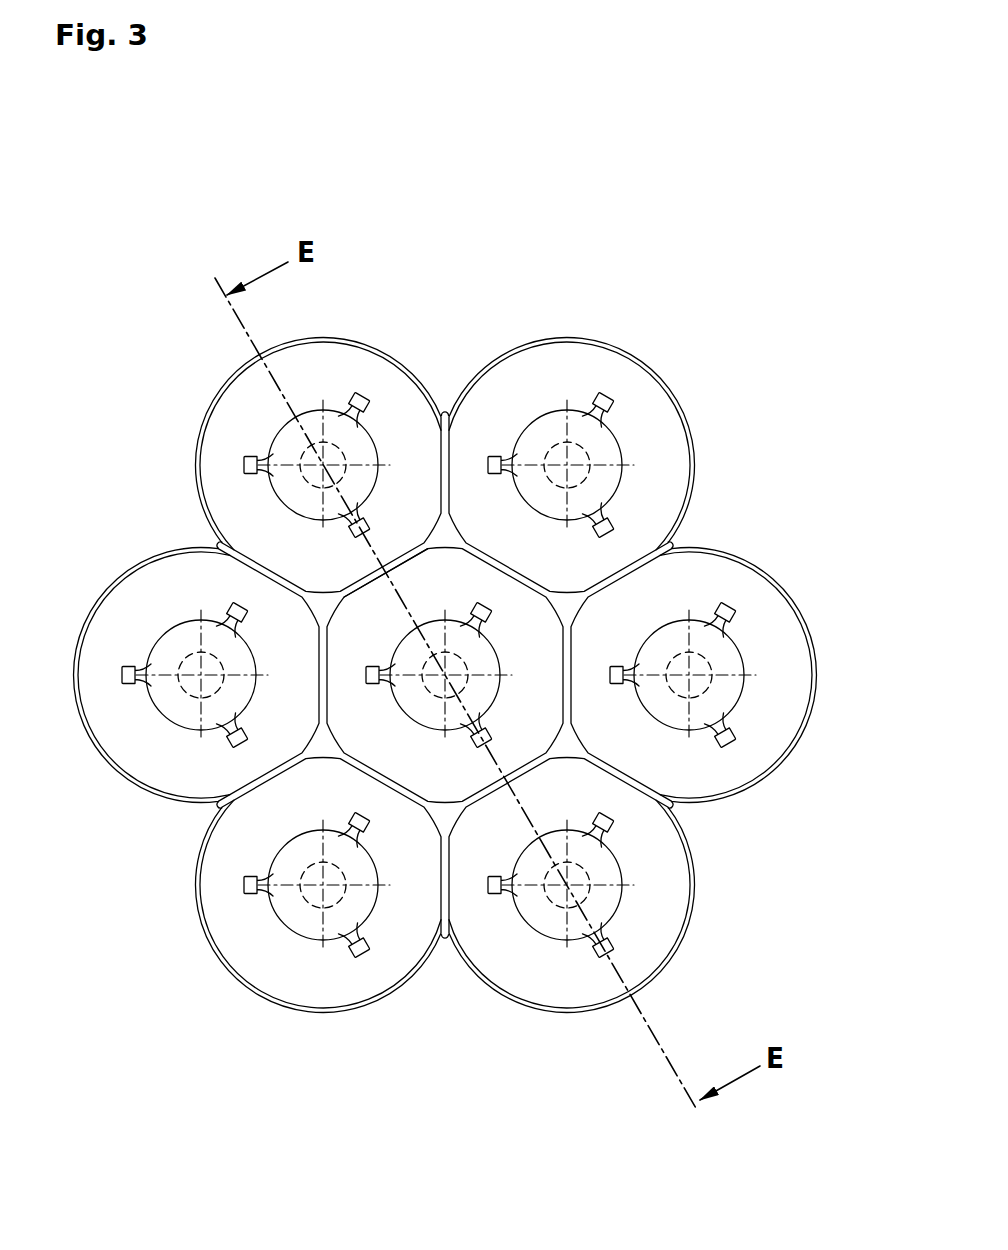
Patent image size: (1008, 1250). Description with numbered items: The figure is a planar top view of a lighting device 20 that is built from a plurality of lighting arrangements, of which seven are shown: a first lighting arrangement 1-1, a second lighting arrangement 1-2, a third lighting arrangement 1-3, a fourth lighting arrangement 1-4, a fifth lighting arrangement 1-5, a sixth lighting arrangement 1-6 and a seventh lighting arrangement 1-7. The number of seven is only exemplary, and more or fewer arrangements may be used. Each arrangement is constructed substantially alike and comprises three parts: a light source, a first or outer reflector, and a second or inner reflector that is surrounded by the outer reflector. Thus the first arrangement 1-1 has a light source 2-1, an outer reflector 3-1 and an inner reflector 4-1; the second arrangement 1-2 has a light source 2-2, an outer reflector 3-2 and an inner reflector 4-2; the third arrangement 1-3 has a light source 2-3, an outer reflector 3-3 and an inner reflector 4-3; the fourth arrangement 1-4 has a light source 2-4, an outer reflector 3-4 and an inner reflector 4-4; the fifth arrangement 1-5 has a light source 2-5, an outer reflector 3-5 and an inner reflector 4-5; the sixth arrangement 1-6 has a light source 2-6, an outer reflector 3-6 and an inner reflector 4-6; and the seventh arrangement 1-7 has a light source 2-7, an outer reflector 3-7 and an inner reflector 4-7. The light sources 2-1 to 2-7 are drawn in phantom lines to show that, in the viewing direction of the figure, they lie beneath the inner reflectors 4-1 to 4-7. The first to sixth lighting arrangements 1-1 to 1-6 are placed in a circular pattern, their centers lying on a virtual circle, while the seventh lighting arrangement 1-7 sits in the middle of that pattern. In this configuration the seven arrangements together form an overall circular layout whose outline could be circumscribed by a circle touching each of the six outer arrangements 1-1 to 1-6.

The lighting device 20 is at (183, 222).
The first lighting arrangement 1-1 is at (130, 556).
The second lighting arrangement 1-2 is at (346, 332).
The third lighting arrangement 1-3 is at (624, 332).
The fourth lighting arrangement 1-4 is at (731, 537).
The fifth lighting arrangement 1-5 is at (708, 888).
The sixth lighting arrangement 1-6 is at (259, 1020).
The seventh lighting arrangement 1-7 is at (467, 955).
The light source 2-1 is at (188, 657).
The light source 2-2 is at (302, 450).
The light source 2-3 is at (588, 450).
The light source 2-4 is at (705, 697).
The light source 2-5 is at (590, 902).
The light source 2-6 is at (302, 902).
The light source 2-7 is at (476, 688).
The first (outer) reflector 3-1 is at (106, 764).
The first (outer) reflector 3-2 is at (226, 382).
The first (outer) reflector 3-3 is at (664, 382).
The first (outer) reflector 3-4 is at (784, 582).
The first (outer) reflector 3-5 is at (662, 977).
The first (outer) reflector 3-6 is at (228, 977).
The first (outer) reflector 3-7 is at (373, 583).
The second (inner) reflector 4-1 is at (178, 707).
The second (inner) reflector 4-2 is at (353, 445).
The second (inner) reflector 4-3 is at (542, 433).
The second (inner) reflector 4-4 is at (718, 660).
The second (inner) reflector 4-5 is at (598, 865).
The second (inner) reflector 4-6 is at (340, 920).
The second (inner) reflector 4-7 is at (472, 655).